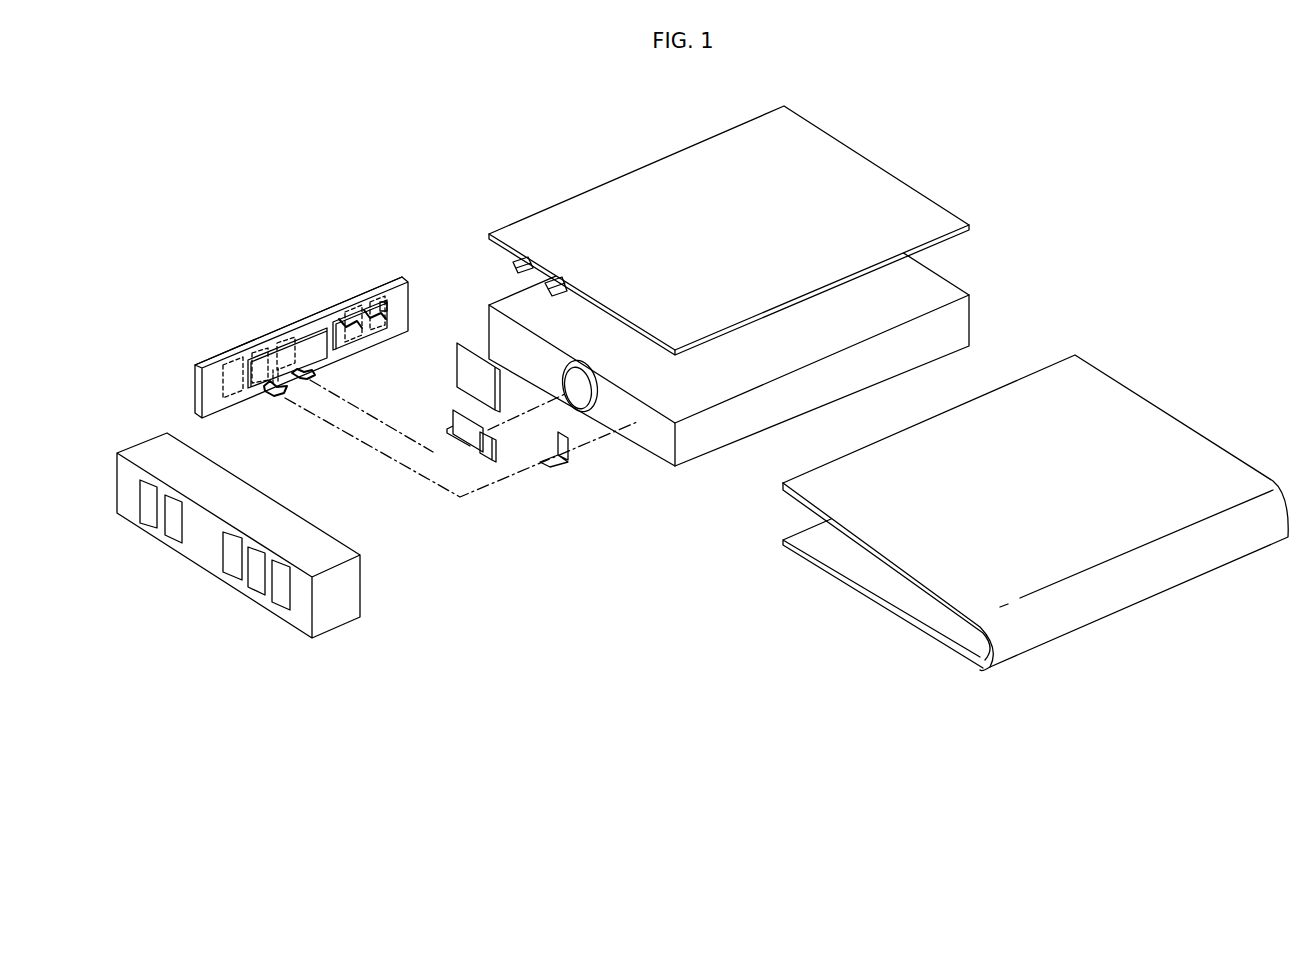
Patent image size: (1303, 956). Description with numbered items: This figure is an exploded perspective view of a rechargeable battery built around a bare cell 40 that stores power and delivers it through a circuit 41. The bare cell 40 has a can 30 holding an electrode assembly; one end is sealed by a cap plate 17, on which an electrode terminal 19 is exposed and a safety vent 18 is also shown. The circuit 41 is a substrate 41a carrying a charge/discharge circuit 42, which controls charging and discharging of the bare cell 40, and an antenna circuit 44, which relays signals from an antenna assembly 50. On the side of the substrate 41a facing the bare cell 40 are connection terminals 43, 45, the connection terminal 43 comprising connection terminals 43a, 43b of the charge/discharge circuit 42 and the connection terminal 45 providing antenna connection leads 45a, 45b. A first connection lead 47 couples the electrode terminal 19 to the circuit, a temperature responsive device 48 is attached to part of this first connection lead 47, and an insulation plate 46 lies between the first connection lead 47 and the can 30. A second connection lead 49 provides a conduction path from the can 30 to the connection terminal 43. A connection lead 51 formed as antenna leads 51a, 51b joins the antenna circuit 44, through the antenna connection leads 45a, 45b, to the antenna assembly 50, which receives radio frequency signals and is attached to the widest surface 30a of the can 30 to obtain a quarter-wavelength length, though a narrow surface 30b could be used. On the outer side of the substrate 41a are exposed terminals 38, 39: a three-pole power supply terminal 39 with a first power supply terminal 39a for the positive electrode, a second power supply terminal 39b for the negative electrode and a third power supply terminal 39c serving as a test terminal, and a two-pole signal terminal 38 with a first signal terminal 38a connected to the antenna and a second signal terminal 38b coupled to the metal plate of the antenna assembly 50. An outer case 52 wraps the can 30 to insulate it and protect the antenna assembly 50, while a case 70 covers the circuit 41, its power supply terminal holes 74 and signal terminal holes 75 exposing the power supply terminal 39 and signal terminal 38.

The cap plate 17 is at (643, 410).
The safety vent 18 is at (568, 367).
The electrode terminal 19 is at (580, 390).
The can 30 is at (763, 321).
The widest surface 30a is at (918, 266).
The narrow surface 30b is at (970, 348).
The signal terminal 38 is at (346, 287).
The first signal terminal 38a is at (373, 300).
The second signal terminal 38b is at (347, 308).
The power supply terminal 39 is at (246, 335).
The first power supply terminal 39a is at (282, 329).
The second power supply terminal 39b is at (262, 355).
The third power supply terminal 39c is at (233, 360).
The bare cell 40 is at (1004, 281).
The circuit 41 is at (296, 341).
The substrate 41a is at (196, 366).
The charge/discharge circuit 42 is at (271, 392).
The connection terminal 43 is at (310, 418).
The connection terminal 43a is at (279, 396).
The connection terminal 43b is at (320, 373).
The antenna circuit 44 is at (393, 323).
The connection terminal 45 is at (398, 270).
The antenna connection lead 45a is at (385, 302).
The antenna connection lead 45b is at (392, 308).
The insulation plate 46 is at (463, 387).
The first connection lead 47 is at (490, 458).
The temperature responsive device 48 is at (477, 446).
The second connection lead 49 is at (563, 463).
The antenna assembly 50 is at (860, 166).
The connection lead 51 is at (563, 248).
The antenna lead 51a is at (522, 262).
The antenna lead 51b is at (557, 281).
The outer case 52 is at (1165, 423).
The case 70 is at (230, 535).
The power supply terminal hole 74 is at (257, 585).
The signal terminal hole 75 is at (148, 515).